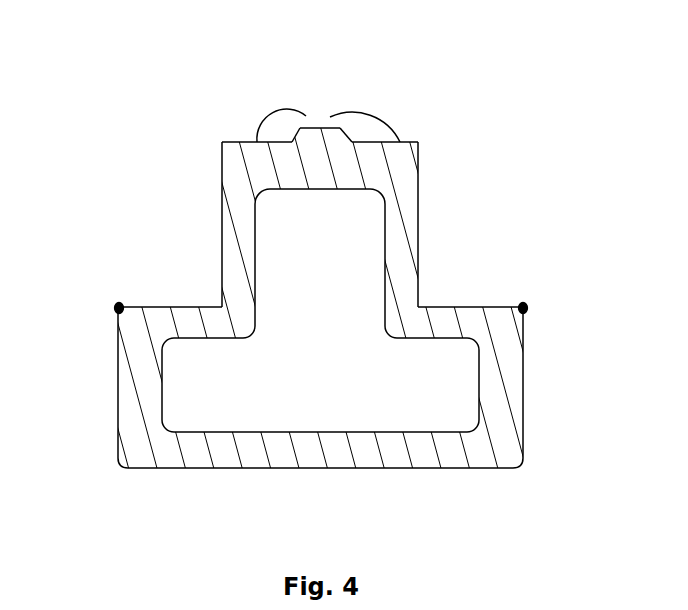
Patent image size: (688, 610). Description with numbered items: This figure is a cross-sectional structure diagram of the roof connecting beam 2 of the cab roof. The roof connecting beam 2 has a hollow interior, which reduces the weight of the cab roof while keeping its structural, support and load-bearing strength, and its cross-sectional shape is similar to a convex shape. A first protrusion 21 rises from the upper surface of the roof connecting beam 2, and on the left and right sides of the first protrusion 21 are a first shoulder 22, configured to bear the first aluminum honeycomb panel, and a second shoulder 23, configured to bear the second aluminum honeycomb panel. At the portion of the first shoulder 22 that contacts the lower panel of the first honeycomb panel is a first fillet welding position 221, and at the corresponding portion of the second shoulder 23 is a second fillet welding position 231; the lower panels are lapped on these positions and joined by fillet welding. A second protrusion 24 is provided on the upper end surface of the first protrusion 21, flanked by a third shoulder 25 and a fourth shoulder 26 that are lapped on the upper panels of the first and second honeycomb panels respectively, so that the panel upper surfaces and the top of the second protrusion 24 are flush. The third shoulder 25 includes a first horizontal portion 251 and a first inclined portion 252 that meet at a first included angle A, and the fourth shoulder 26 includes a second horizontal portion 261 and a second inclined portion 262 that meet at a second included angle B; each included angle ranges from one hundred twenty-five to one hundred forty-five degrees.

The roof connecting beam 2 is at (422, 447).
The first protrusion 21 is at (405, 220).
The first shoulder 22 is at (172, 307).
The second shoulder 23 is at (463, 307).
The first fillet welding position 221 is at (119, 308).
The second fillet welding position 231 is at (523, 308).
The second protrusion 24 is at (317, 128).
The third shoulder 25 is at (253, 141).
The first horizontal portion 251 is at (228, 141).
The first inclined portion 252 is at (299, 128).
The fourth shoulder 26 is at (402, 141).
The second horizontal portion 261 is at (418, 142).
The second inclined portion 262 is at (340, 128).
The first included angle A is at (282, 110).
The second included angle B is at (368, 113).